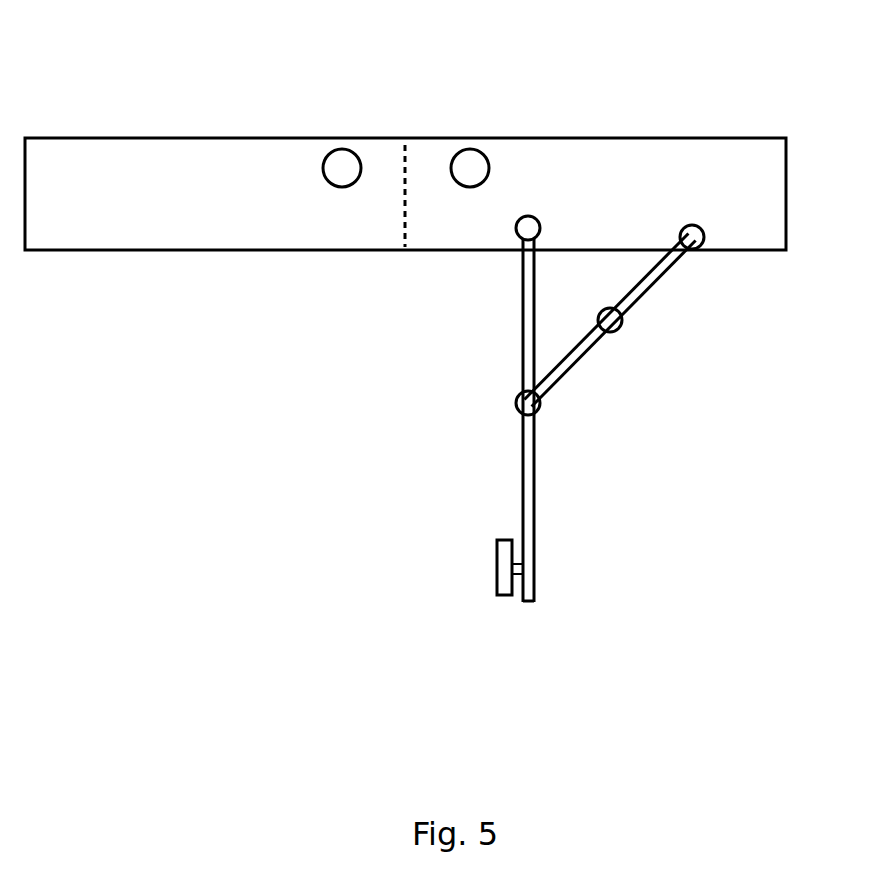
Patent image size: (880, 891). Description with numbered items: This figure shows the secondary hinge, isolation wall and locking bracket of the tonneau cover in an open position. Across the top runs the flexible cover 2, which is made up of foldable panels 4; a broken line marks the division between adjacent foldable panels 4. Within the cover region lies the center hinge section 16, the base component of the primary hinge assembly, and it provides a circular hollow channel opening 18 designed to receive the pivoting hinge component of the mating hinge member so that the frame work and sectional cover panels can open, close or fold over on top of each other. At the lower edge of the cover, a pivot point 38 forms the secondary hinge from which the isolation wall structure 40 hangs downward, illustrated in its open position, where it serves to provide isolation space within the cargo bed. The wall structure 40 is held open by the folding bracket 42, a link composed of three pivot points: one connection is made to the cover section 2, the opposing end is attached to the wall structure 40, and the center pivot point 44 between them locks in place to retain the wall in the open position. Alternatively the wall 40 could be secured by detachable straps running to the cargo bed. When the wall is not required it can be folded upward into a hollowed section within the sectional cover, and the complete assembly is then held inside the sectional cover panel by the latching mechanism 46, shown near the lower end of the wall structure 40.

The flexible cover 2 is at (645, 120).
The foldable panels 4 is at (399, 120).
The center hinge section 16 is at (341, 146).
The circular hollow channel opening 18 is at (470, 146).
The pivot joint 38 is at (519, 239).
The isolation wall structure 40 is at (536, 512).
The folding bracket 42 is at (580, 360).
The center pivot point 44 is at (515, 403).
The latching mechanism 46 is at (495, 567).